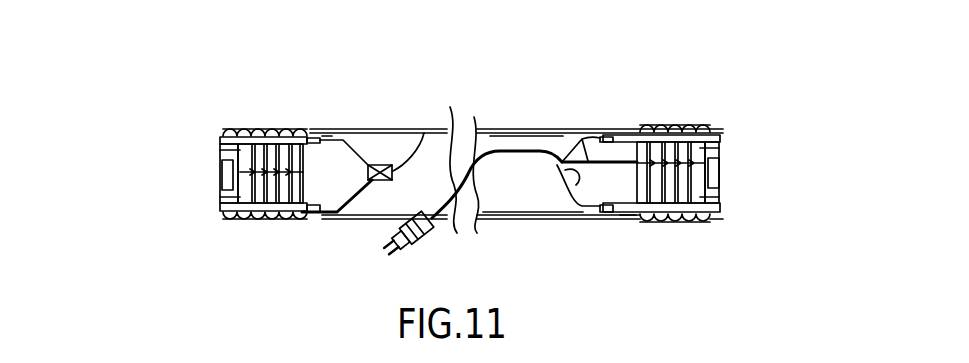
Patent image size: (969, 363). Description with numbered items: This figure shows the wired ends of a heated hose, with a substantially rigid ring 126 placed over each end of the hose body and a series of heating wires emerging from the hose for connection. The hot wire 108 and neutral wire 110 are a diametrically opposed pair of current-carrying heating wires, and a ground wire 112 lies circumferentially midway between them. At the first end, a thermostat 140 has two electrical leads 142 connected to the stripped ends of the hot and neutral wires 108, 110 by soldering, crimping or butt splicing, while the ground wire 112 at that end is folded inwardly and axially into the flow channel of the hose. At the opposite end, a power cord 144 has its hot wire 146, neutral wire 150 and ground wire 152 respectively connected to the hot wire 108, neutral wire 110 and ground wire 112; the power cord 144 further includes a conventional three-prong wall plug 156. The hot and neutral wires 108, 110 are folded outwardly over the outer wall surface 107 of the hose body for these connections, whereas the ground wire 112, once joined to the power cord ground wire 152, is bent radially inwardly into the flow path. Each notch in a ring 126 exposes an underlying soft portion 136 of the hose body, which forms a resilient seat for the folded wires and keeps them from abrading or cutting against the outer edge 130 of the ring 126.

The outer wall 107 is at (527, 130).
The hot wire 108 is at (220, 136).
The neutral wire 110 is at (250, 227).
The ground wire 112 is at (220, 167).
The ring 126 is at (300, 122).
The outer edge 130 is at (220, 148).
The exposed portion 136 is at (220, 223).
The thermostat 140 is at (475, 128).
The electrical lead 142 is at (425, 133).
The power cord 144 is at (547, 149).
The hot wire 146 is at (586, 134).
The neutral wire 150 is at (540, 219).
The ground wire 152 is at (565, 170).
The three-prong wall plug 156 is at (422, 241).